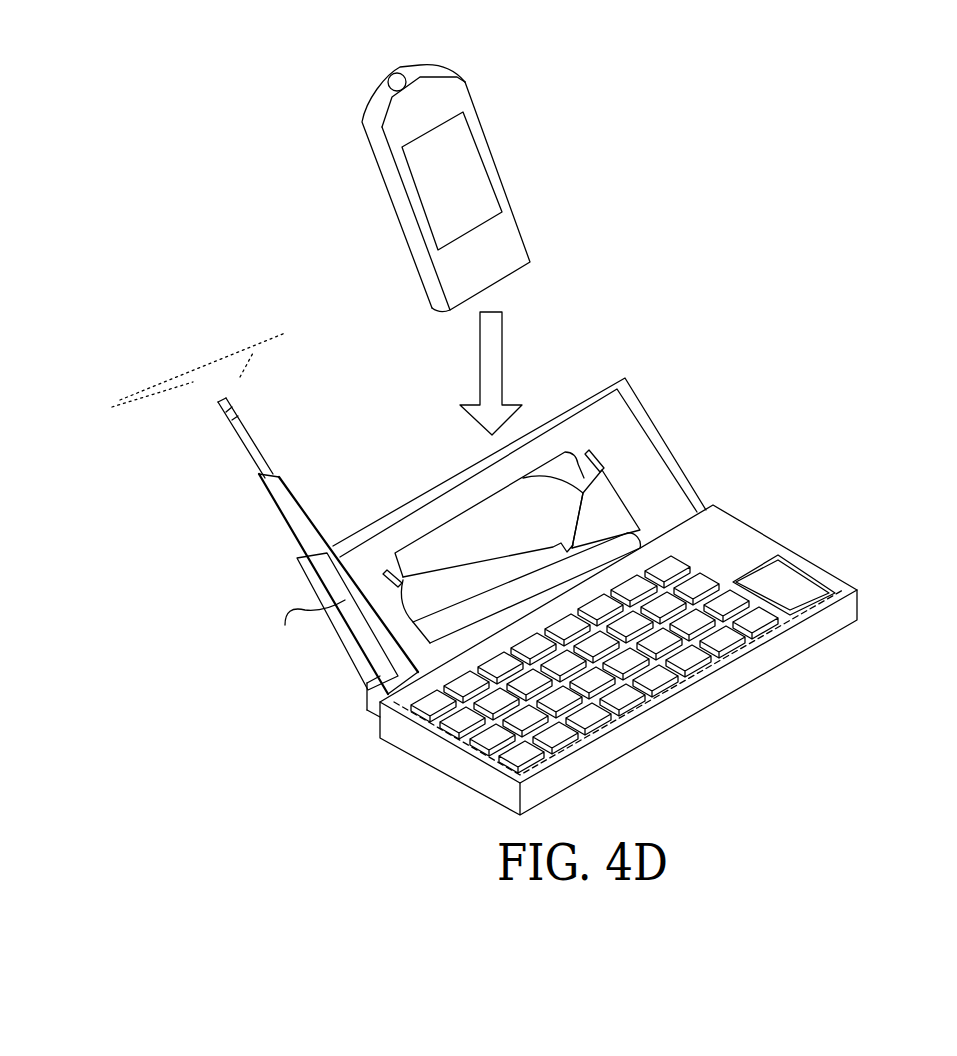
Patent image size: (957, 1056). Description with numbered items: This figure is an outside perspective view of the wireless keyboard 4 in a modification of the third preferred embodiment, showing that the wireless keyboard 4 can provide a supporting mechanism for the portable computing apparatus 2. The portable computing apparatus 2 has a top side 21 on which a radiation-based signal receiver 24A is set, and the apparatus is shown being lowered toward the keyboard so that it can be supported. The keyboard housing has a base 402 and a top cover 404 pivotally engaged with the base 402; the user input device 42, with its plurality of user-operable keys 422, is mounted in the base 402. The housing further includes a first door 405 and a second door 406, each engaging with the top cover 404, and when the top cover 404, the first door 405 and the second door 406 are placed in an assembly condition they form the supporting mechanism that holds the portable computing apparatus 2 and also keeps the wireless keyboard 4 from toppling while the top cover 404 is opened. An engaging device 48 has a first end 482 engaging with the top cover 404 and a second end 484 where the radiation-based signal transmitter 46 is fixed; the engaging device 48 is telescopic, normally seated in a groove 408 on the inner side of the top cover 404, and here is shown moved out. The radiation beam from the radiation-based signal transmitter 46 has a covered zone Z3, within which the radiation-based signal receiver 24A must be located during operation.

The portable computing apparatus 2 is at (520, 200).
The top side 21 is at (417, 73).
The radiation-based signal receiver 24A is at (395, 80).
The wireless keyboard 4 is at (735, 500).
The user input device 42 is at (792, 552).
The user-operable keys 422 is at (712, 578).
The base 402 is at (428, 748).
The top cover 404 is at (372, 700).
The first door 405 is at (352, 672).
The second door 406 is at (350, 656).
The groove 408 is at (330, 640).
The engaging device 48 is at (262, 470).
The first end 482 is at (303, 568).
The second end 484 is at (228, 422).
The radiation-based signal transmitter 46 is at (217, 413).
The covered zone Z3 is at (120, 400).